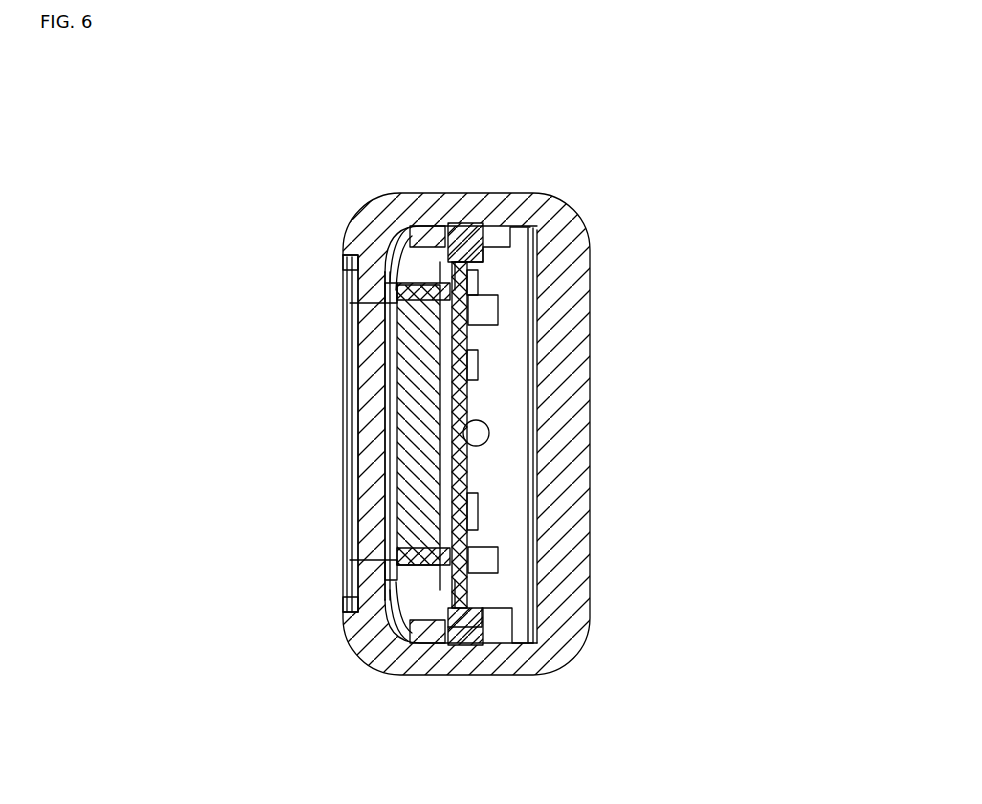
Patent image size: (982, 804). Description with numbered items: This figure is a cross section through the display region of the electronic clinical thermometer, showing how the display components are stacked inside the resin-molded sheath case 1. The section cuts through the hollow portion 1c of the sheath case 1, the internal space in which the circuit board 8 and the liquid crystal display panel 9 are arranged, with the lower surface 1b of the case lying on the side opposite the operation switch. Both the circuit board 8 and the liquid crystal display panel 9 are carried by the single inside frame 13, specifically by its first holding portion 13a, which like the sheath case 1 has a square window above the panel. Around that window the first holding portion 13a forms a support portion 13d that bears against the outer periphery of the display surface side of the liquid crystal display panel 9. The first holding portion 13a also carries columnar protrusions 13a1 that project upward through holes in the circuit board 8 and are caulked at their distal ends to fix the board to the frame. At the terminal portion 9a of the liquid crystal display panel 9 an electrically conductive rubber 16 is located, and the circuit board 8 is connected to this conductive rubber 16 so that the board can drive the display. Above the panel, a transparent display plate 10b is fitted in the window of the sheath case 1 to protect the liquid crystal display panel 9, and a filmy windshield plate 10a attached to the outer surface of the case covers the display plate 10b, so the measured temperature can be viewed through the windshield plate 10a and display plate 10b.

The sheath case 1 is at (513, 195).
The lower surface 1b is at (587, 465).
The hollow portion 1c is at (498, 500).
The circuit board 8 is at (462, 392).
The liquid crystal display panel 9 is at (413, 432).
The terminal portion 9a is at (418, 740).
The windshield plate 10a is at (357, 483).
The display plate 10b is at (357, 360).
The inside frame 13 is at (382, 607).
The first holding portion 13a is at (390, 268).
The columnar protrusions 13a1 is at (487, 310).
The support portion 13d is at (358, 575).
The electrically conductive rubber 16 is at (478, 743).